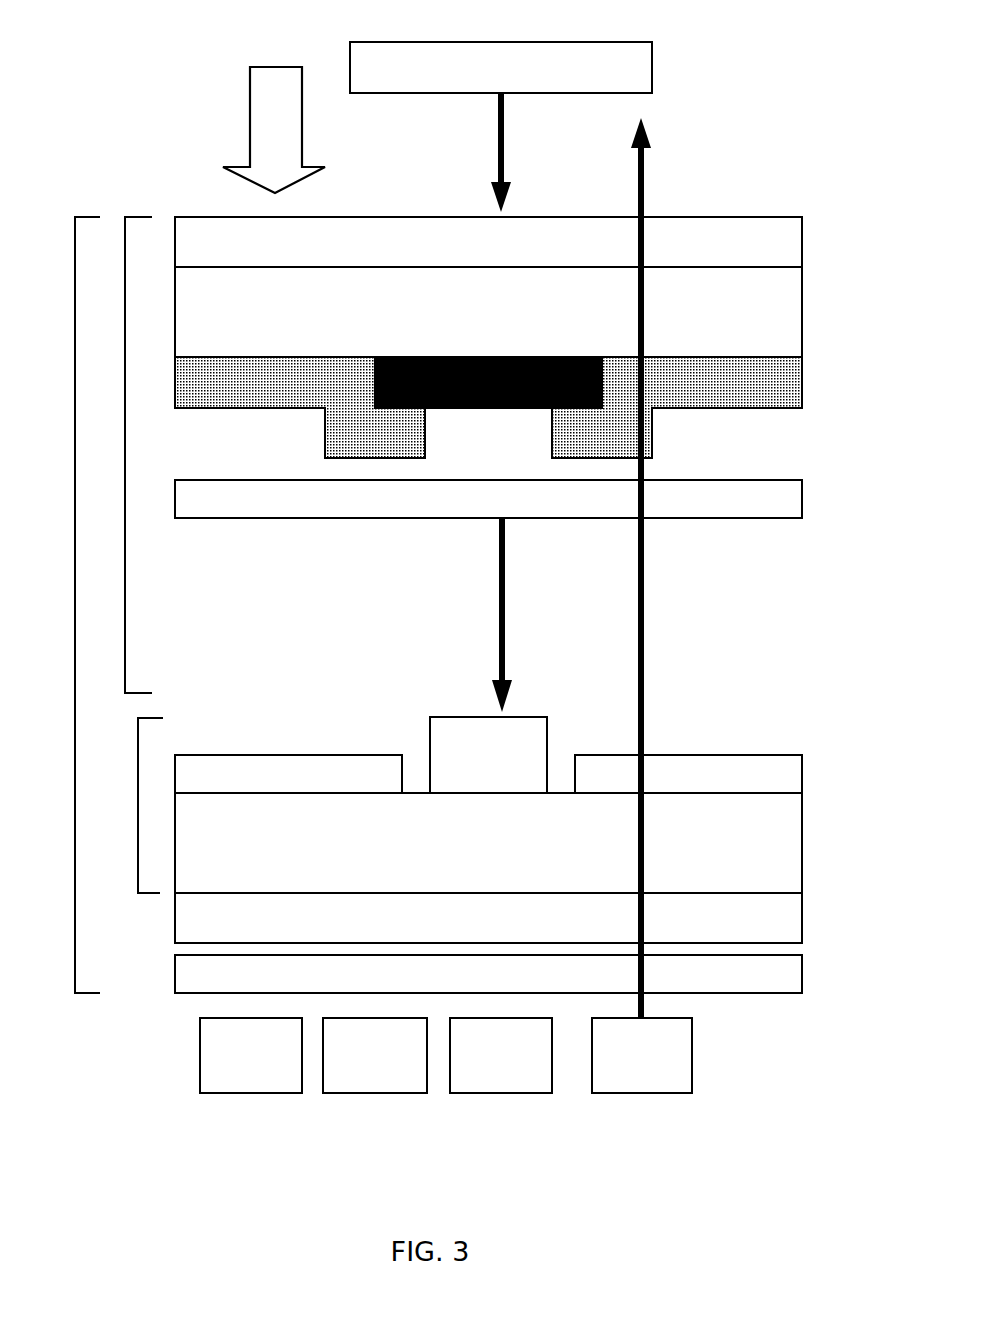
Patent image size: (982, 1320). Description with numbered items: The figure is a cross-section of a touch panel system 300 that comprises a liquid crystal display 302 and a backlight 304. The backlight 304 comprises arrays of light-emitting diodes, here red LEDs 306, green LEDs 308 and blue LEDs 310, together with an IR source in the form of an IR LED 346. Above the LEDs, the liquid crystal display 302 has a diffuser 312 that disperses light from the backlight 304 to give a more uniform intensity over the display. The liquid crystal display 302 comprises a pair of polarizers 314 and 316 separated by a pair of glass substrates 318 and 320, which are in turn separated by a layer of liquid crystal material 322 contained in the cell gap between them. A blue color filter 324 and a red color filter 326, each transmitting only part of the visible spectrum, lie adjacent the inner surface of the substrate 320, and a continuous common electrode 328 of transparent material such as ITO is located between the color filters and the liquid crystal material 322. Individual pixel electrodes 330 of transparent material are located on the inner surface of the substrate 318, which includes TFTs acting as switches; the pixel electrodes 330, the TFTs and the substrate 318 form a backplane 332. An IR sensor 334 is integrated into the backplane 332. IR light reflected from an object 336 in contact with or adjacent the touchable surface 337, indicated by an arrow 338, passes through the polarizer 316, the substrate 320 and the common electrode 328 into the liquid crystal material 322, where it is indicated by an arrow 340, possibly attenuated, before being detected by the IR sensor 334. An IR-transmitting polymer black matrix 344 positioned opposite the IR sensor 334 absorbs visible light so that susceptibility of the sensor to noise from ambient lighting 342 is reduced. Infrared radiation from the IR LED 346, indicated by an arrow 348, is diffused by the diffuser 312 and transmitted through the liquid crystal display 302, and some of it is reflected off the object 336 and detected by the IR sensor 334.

The touch panel system 300 is at (703, 158).
The liquid crystal display 302 is at (75, 593).
The backlight 304 is at (165, 1057).
The red LEDs 306 is at (250, 1095).
The green LEDs 308 is at (375, 1095).
The blue LEDs 310 is at (502, 1095).
The diffuser 312 is at (488, 974).
The polarizer 314 is at (488, 918).
The polarizer 316 is at (488, 242).
The glass substrate 318 is at (488, 843).
The glass substrate 320 is at (488, 312).
The liquid crystal material 322 is at (343, 607).
The blue color filter 324 is at (300, 407).
The red color filter 326 is at (677, 407).
The common electrode 328 is at (488, 499).
The pixel electrodes 330 is at (250, 755).
The backplane 332 is at (137, 808).
The IR sensor 334 is at (452, 717).
The object 336 is at (501, 67).
The touchable surface 337 is at (710, 217).
The arrow 338 is at (480, 137).
The arrow 340 is at (505, 592).
The ambient lighting 342 is at (250, 142).
The IR-transmitting polymer black matrix 344 is at (450, 410).
The IR LED 346 is at (640, 1095).
The arrow 348 is at (644, 592).